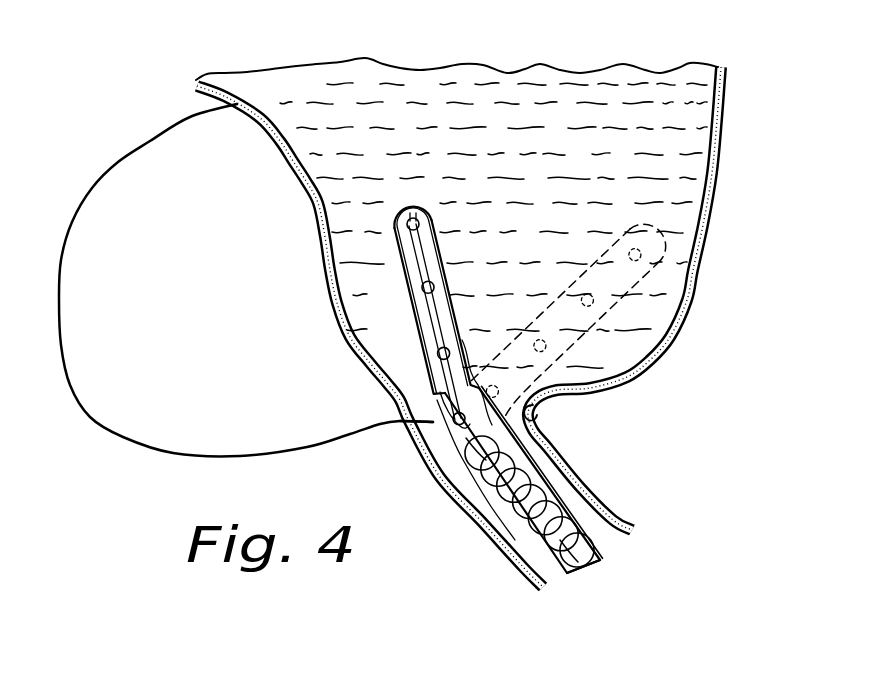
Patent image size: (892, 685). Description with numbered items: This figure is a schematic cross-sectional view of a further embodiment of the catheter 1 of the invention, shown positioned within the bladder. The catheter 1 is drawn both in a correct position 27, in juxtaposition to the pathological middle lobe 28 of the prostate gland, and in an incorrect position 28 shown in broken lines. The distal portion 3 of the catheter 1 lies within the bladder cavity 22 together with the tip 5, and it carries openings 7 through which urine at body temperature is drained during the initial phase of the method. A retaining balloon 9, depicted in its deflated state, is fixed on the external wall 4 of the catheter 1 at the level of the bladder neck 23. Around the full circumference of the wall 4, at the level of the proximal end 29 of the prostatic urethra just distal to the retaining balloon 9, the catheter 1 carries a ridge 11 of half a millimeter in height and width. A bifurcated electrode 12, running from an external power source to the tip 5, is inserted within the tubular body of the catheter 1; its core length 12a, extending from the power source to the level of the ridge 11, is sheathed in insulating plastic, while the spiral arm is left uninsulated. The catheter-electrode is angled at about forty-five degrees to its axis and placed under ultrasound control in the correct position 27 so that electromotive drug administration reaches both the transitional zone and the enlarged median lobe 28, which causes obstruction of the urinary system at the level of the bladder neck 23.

The catheter 1 is at (528, 552).
The distal portion 3 is at (420, 311).
The external wall 4 is at (412, 433).
The tip 5 is at (410, 212).
The openings 7 is at (425, 292).
The retaining balloon 9 is at (373, 420).
The ridge 11 is at (482, 503).
The electrode 12 is at (578, 553).
The core length 12a is at (582, 510).
The bladder cavity 22 is at (672, 201).
The bladder neck 23 is at (530, 410).
The correct position 27 is at (420, 336).
The middle lobe 28 is at (143, 421).
The proximal end 29 is at (582, 472).